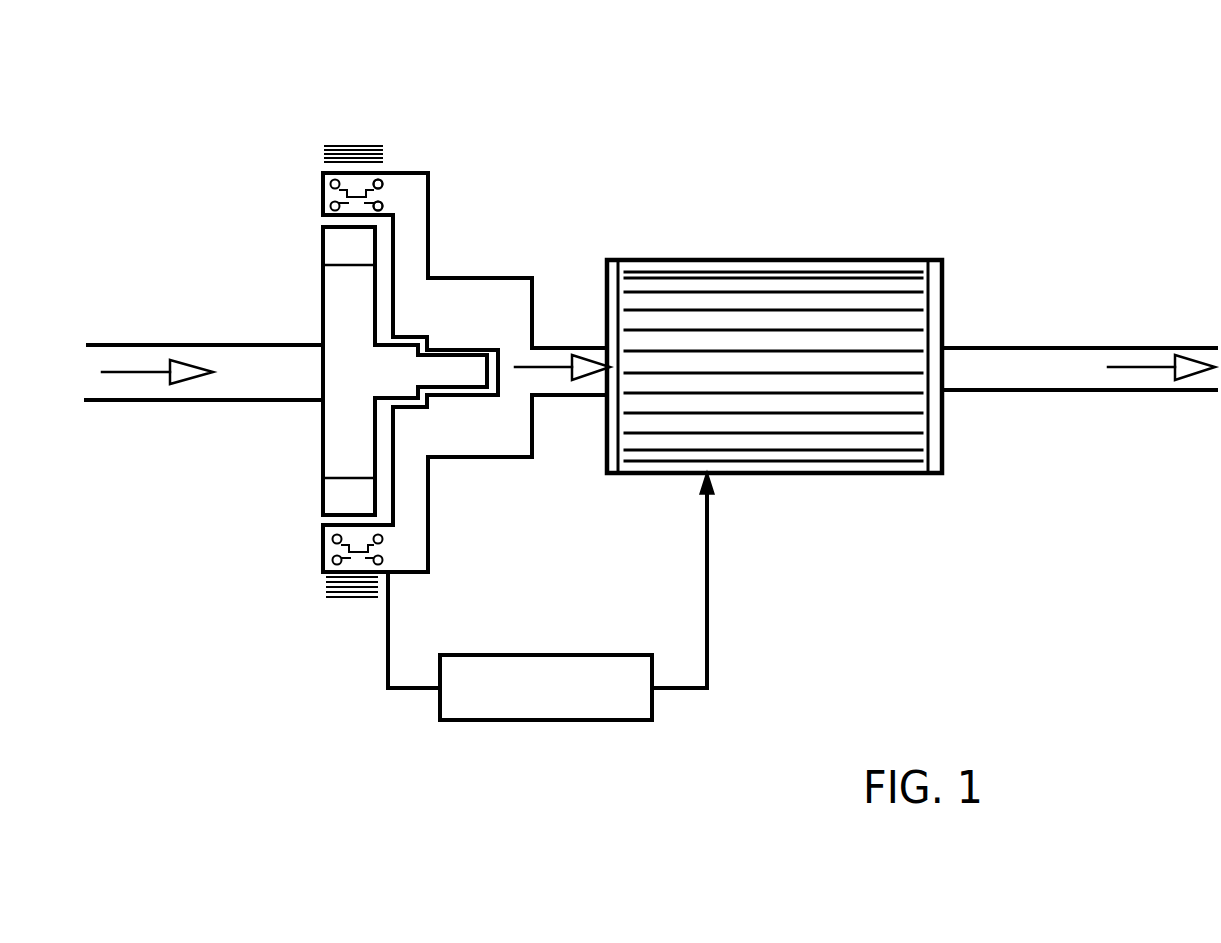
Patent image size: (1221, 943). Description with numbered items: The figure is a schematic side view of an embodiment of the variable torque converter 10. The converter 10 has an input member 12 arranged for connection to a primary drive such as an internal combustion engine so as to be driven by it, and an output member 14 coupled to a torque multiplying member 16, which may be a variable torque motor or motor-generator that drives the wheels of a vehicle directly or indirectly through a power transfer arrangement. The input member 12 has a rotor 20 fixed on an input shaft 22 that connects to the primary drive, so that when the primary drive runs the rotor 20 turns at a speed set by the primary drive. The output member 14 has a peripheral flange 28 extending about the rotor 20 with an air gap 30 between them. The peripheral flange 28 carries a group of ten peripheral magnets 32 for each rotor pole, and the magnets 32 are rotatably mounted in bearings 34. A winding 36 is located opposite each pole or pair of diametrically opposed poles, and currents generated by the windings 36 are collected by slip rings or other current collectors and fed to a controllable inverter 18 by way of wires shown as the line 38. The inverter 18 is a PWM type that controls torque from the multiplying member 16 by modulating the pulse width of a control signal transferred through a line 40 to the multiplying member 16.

The variable torque converter 10 is at (947, 165).
The input member 12 is at (272, 465).
The output member 14 is at (563, 230).
The torque multiplying member 16 is at (887, 538).
The controllable inverter 18 is at (555, 723).
The rotor 20 is at (320, 293).
The input shaft 22 is at (188, 343).
The peripheral flange 28 is at (305, 573).
The air gap 30 is at (317, 220).
The peripheral magnets 32 is at (378, 170).
The bearings 34 is at (390, 195).
The winding 36 is at (362, 145).
The line 38 is at (387, 648).
The line 40 is at (708, 623).